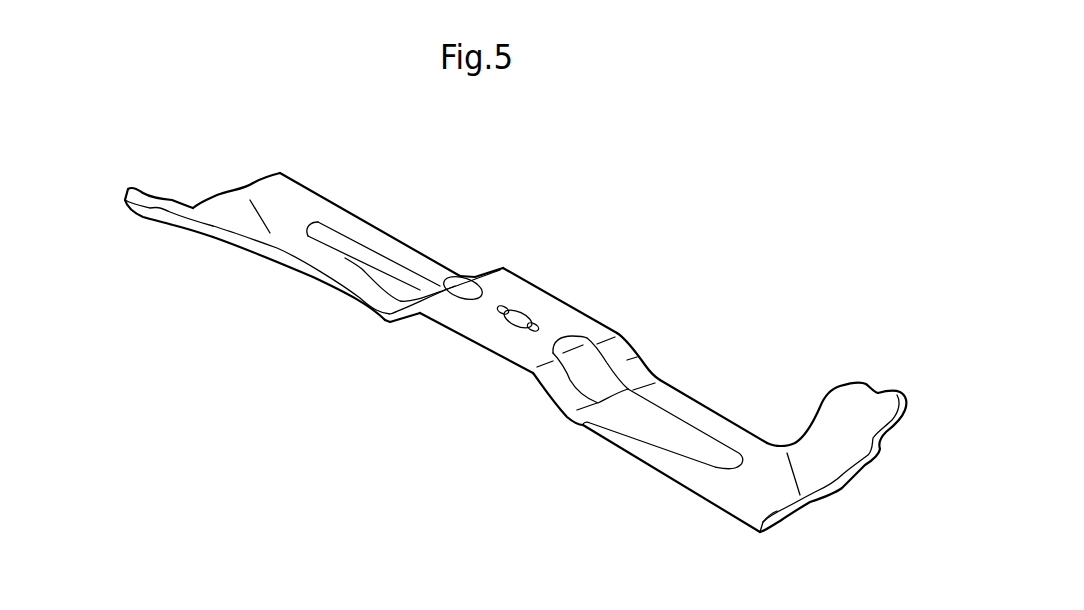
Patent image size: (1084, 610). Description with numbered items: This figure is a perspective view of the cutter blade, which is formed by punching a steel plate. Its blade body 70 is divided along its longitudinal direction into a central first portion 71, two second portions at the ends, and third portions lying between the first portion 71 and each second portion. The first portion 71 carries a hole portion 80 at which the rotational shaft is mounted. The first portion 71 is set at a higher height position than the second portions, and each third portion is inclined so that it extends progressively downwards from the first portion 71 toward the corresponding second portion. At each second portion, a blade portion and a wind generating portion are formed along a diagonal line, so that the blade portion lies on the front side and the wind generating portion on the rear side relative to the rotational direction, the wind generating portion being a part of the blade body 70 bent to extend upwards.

The blade body 70 is at (603, 232).
The first portion 71 is at (563, 320).
The hole portion 80 is at (518, 316).